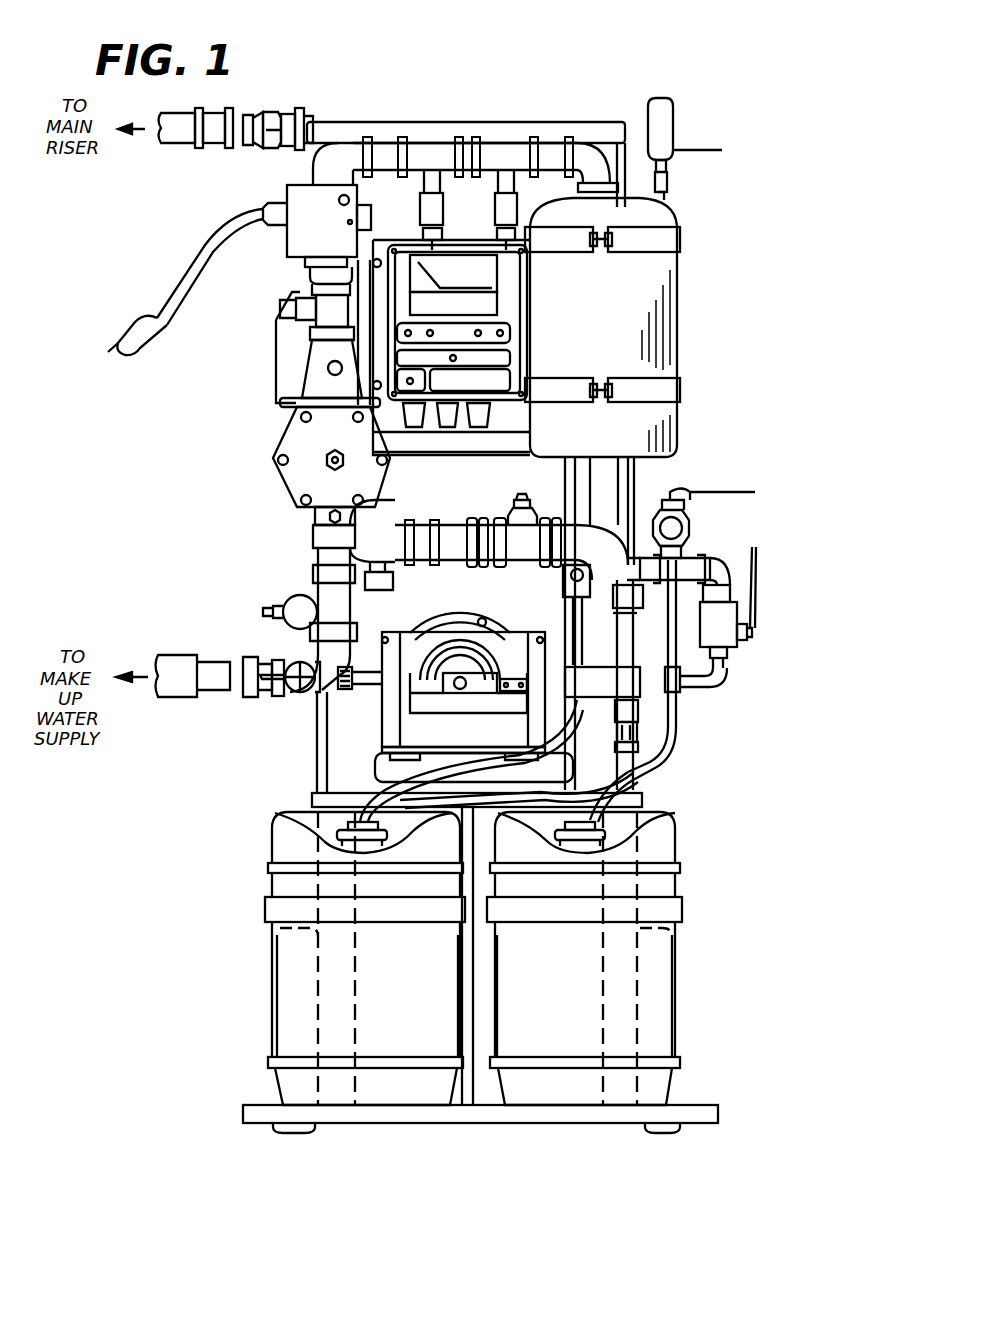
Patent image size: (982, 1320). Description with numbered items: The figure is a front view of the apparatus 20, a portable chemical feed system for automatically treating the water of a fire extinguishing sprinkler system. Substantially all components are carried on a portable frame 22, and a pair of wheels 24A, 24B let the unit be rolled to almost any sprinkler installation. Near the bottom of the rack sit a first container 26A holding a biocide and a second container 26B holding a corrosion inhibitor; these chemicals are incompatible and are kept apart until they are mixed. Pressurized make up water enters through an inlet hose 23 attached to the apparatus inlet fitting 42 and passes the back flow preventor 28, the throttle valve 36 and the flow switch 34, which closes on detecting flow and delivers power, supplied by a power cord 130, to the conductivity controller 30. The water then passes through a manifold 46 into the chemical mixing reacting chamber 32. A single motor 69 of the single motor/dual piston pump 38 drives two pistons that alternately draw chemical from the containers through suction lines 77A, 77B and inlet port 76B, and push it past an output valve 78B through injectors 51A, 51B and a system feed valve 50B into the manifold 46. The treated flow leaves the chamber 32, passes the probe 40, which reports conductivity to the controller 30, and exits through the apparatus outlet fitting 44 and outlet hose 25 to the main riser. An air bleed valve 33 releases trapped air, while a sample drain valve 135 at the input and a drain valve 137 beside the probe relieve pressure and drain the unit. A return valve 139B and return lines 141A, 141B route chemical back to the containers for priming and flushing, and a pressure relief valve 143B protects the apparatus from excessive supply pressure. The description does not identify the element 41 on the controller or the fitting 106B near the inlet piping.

The apparatus 20 is at (240, 467).
The portable frame 22 is at (306, 758).
The inlet hose 23 is at (178, 668).
The wheel 24A is at (265, 1005).
The wheel 24B is at (688, 1005).
The outlet hose 25 is at (185, 137).
The first container 26A is at (280, 852).
The second container 26B is at (668, 845).
The back flow preventor 28 is at (293, 452).
The conductivity controller 30 is at (525, 418).
The chemical mixing reacting chamber 32 is at (665, 314).
The air bleed valve 33 is at (690, 143).
The flow switch 34 is at (305, 205).
The throttle valve 36 is at (322, 577).
The single motor/dual piston pump 38 is at (517, 630).
The probe 40 is at (522, 505).
The controller display panel 41 is at (505, 308).
The apparatus inlet fitting 42 is at (243, 697).
The apparatus outlet fitting 44 is at (258, 118).
The manifold 46 is at (553, 123).
The system feed valve 50B is at (718, 515).
The injector 51A is at (432, 200).
The injector 51B is at (507, 200).
The single motor 69 is at (420, 617).
The inlet port 76B is at (632, 712).
The suction line 77A is at (650, 800).
The suction line 77B is at (662, 775).
The output valve 78B is at (720, 625).
The pipe fitting 106B is at (340, 702).
The power cord 130 is at (165, 292).
The sample drain valve 135 is at (293, 613).
The drain valve 137 is at (335, 542).
The return valve 139B is at (768, 630).
The return line 141A is at (570, 627).
The return line 141B is at (680, 737).
The pressure relief valve 143B is at (690, 548).